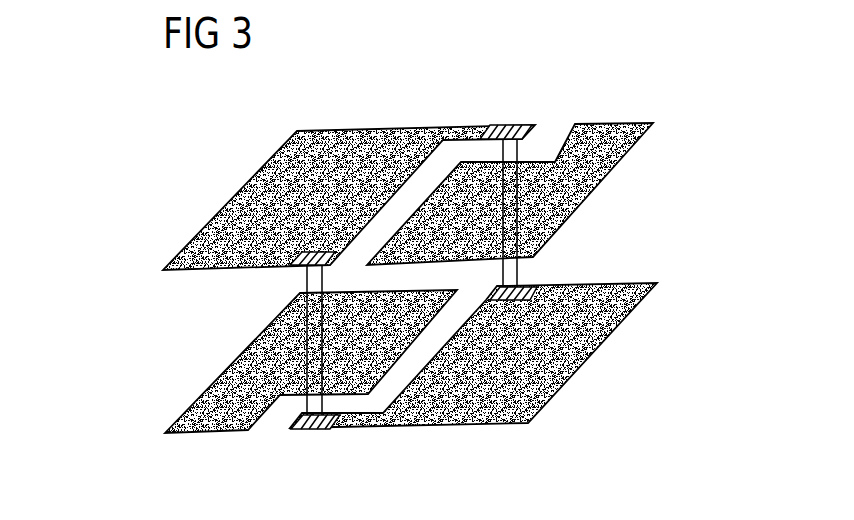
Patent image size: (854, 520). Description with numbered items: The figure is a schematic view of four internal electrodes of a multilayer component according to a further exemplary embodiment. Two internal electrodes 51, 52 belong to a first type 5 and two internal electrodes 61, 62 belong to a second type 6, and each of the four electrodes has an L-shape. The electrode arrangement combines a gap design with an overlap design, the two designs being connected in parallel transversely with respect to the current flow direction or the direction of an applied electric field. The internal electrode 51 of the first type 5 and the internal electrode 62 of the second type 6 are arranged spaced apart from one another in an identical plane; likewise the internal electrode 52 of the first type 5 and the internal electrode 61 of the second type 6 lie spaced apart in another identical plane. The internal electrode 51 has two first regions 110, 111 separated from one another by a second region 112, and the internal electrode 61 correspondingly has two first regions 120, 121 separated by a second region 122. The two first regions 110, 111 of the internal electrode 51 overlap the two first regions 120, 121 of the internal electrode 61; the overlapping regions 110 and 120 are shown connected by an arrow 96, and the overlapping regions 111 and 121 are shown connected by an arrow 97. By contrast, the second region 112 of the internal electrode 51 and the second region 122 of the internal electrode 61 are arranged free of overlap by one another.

The first type 5 is at (100, 223).
The internal electrode of the first type 51 is at (319, 184).
The internal electrode of the first type 52 is at (230, 365).
The second type 6 is at (722, 173).
The internal electrode of the second type 61 is at (486, 362).
The internal electrode of the second type 62 is at (583, 180).
The arrow 96 is at (535, 182).
The arrow 97 is at (307, 358).
The first region 110 is at (488, 127).
The first region 111 is at (298, 268).
The second region 112 is at (286, 161).
The first region 120 is at (524, 288).
The first region 121 is at (313, 428).
The second region 122 is at (487, 402).